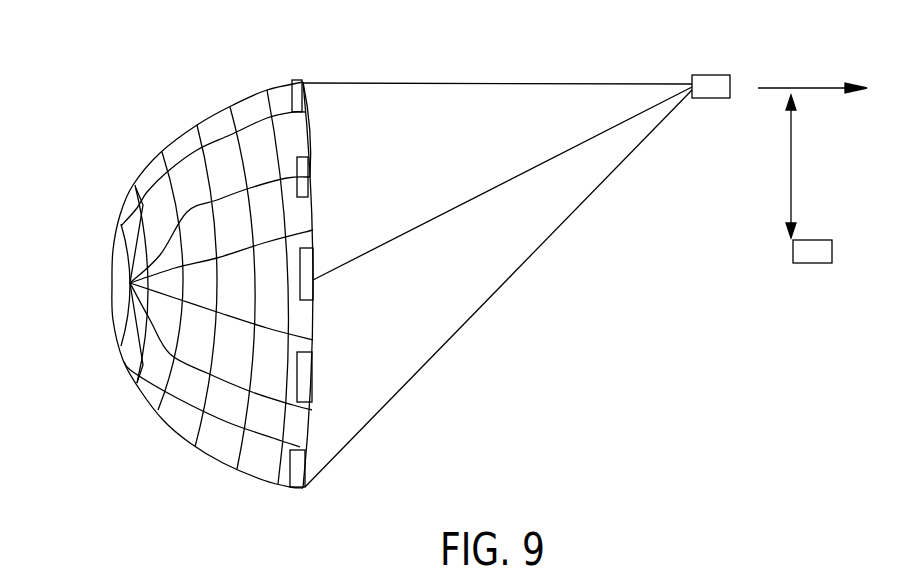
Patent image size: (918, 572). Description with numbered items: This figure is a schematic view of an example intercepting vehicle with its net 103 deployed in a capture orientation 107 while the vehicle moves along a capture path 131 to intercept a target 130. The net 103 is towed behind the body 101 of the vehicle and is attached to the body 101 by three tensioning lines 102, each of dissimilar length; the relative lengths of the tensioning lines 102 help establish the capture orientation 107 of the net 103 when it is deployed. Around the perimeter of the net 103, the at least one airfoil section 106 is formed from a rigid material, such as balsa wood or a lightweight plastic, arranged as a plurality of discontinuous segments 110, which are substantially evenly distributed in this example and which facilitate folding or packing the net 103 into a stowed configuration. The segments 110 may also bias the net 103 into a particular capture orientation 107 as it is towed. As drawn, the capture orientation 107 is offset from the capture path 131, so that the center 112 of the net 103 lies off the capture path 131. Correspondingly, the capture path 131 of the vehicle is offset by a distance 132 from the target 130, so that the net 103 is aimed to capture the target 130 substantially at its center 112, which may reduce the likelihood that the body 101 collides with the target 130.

The body 101 is at (705, 74).
The tensioning lines 102 is at (472, 83).
The net 103 is at (196, 122).
The airfoil section 106 is at (305, 88).
The capture orientation 107 is at (155, 159).
The discontinuous segments 110 is at (296, 81).
The center 112 is at (111, 283).
The target 130 is at (820, 263).
The capture path 131 is at (803, 88).
The distance 132 is at (790, 173).